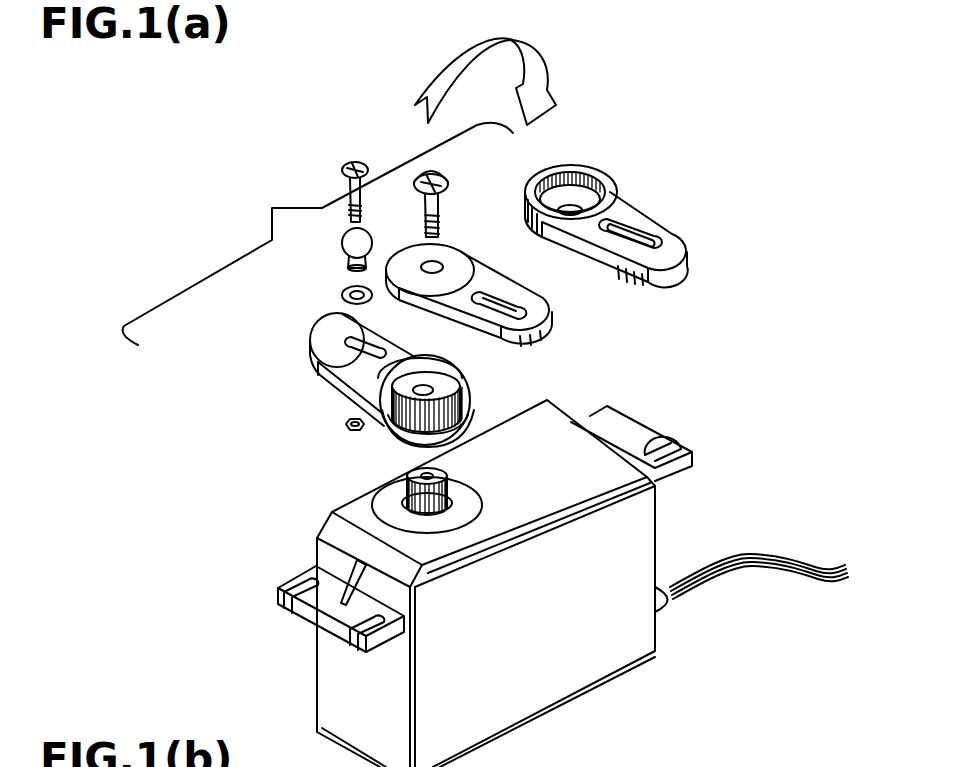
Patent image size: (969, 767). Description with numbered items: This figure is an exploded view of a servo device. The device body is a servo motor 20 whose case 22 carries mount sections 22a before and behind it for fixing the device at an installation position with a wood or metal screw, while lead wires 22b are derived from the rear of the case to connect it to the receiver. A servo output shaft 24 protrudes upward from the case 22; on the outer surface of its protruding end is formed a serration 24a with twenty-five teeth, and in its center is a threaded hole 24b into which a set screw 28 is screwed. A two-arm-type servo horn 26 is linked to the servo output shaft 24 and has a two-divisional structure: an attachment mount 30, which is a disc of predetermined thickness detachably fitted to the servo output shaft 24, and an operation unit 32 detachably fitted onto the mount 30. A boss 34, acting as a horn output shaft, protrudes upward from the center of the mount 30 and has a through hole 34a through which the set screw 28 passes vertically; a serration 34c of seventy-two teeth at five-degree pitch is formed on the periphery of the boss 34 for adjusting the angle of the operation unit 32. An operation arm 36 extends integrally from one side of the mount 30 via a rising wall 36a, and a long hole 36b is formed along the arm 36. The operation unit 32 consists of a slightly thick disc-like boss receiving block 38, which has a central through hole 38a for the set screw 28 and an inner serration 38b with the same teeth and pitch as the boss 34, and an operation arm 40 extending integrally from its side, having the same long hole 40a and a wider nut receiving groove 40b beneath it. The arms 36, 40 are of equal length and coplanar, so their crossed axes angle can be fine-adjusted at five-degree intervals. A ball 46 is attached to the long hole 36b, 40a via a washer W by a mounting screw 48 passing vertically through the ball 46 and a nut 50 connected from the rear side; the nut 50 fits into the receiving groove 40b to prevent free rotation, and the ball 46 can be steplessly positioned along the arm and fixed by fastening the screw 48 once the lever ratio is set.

The servo motor 20 is at (618, 408).
The case 22 is at (563, 667).
The mount sections 22a is at (300, 590).
The lead wires 22b is at (752, 555).
The servo output shaft 24 is at (447, 513).
The serration 24a is at (413, 502).
The threaded hole 24b is at (430, 475).
The servo horn 26 is at (318, 234).
The set screw 28 is at (444, 174).
The attachment mount 30 is at (483, 407).
The operation unit 32 is at (653, 219).
The boss 34 is at (440, 384).
The through hole 34a is at (395, 398).
The serration 34c is at (407, 424).
The operation arm 36 is at (322, 333).
The rising wall 36a is at (390, 375).
The long hole 36b is at (357, 348).
The boss receiving block 38 is at (410, 258).
The through hole 38a is at (440, 262).
The inner serration 38b is at (566, 180).
The operation arm 40 is at (677, 237).
The long hole 40a is at (552, 322).
The nut receiving groove 40b is at (667, 252).
The ball 46 is at (342, 233).
The mounting screw 48 is at (355, 163).
The nut 50 is at (346, 428).
The washer W is at (343, 292).